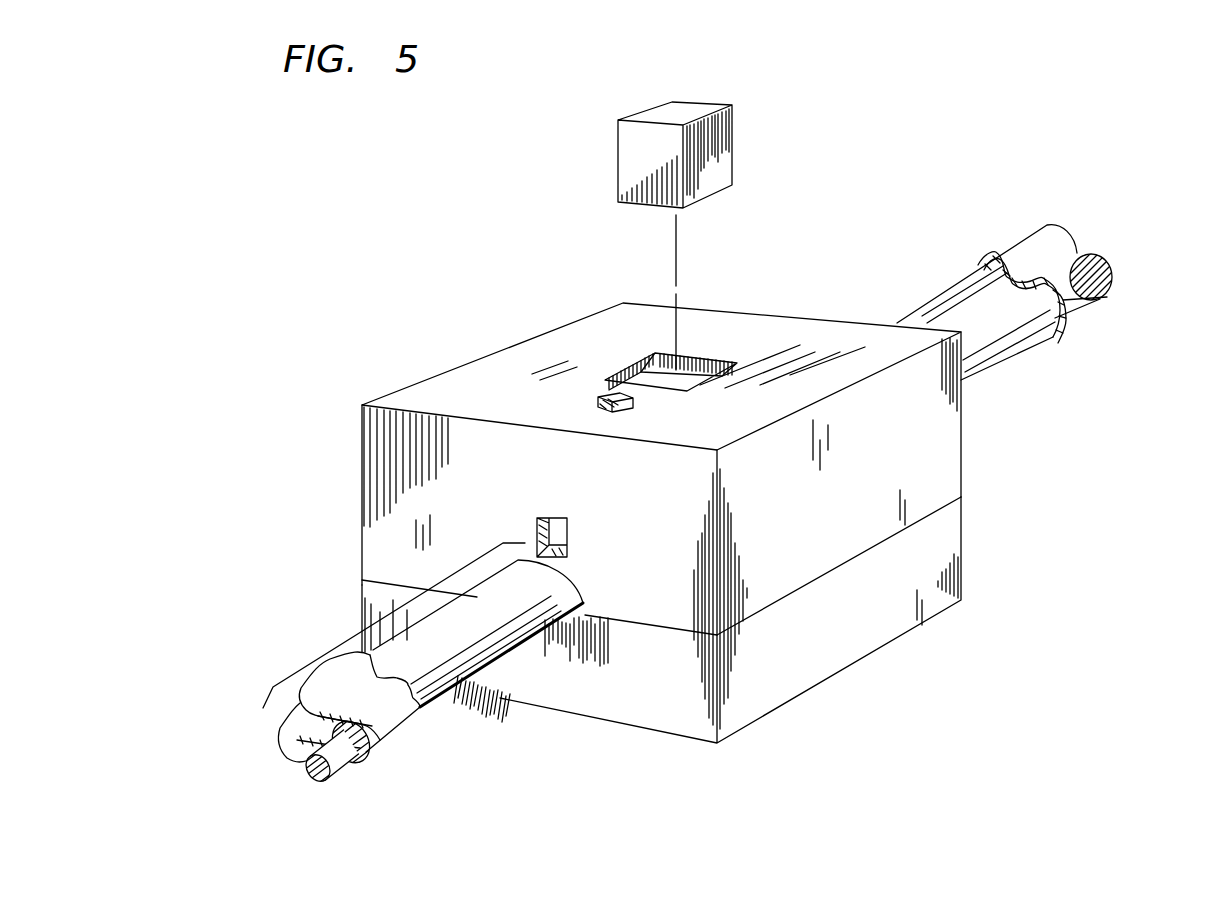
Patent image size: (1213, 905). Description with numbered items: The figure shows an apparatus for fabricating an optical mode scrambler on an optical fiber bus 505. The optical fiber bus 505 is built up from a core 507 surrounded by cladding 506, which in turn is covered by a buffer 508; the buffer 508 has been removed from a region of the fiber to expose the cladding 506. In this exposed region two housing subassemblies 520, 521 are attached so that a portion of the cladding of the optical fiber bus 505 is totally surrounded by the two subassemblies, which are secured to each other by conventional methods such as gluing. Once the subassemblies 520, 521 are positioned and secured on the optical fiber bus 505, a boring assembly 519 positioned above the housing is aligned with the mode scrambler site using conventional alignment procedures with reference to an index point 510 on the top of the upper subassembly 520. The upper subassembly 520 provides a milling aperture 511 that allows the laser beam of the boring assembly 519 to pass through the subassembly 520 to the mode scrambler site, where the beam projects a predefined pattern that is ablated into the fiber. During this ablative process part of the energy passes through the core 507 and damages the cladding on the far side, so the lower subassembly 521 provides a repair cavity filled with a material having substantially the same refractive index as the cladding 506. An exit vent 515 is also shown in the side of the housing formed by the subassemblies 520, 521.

The optical fiber bus 505 is at (358, 636).
The cladding 506 is at (386, 760).
The core 507 is at (303, 783).
The buffer 508 is at (1055, 333).
The index point 510 is at (600, 398).
The milling aperture 511 is at (712, 362).
The exit vent 515 is at (567, 534).
The boring assembly 519 is at (733, 113).
The subassembly 520 is at (961, 470).
The subassembly 521 is at (933, 613).